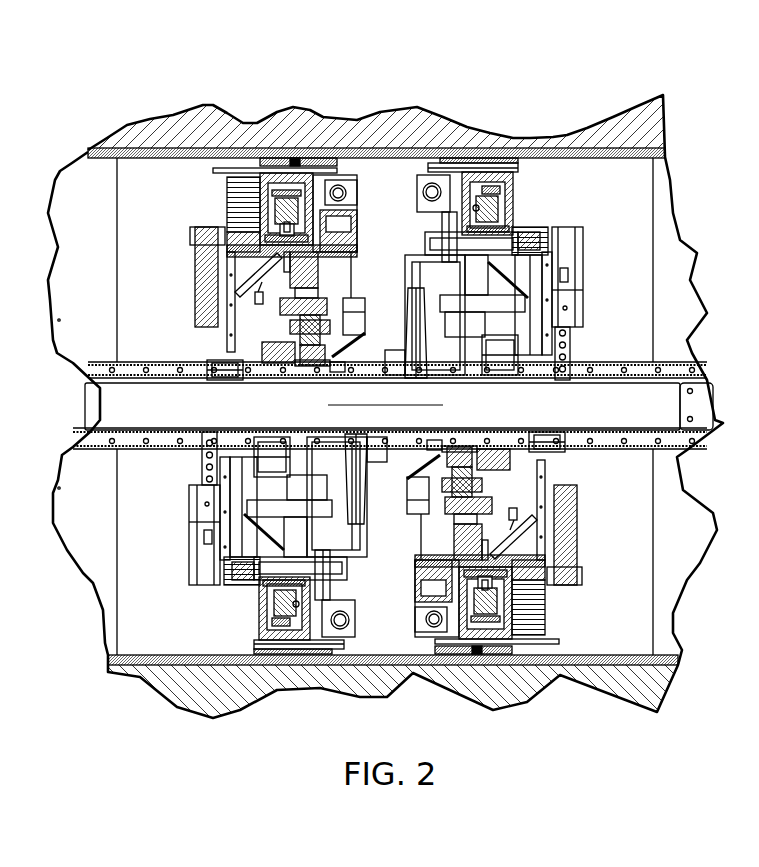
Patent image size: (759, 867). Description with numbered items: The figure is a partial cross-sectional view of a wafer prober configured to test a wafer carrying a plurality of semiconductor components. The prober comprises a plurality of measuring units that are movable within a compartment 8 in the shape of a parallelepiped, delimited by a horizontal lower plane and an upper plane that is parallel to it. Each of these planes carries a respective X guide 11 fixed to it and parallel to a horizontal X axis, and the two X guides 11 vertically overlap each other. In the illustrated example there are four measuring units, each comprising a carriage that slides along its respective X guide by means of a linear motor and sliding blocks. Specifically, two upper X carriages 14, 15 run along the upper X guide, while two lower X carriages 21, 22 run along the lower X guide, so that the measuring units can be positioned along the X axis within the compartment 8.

The compartment 8 is at (642, 293).
The X guide 11 is at (157, 152).
The upper X carriage 14 is at (190, 213).
The upper X carriage 15 is at (558, 222).
The lower X carriage 21 is at (205, 601).
The lower X carriage 22 is at (569, 590).